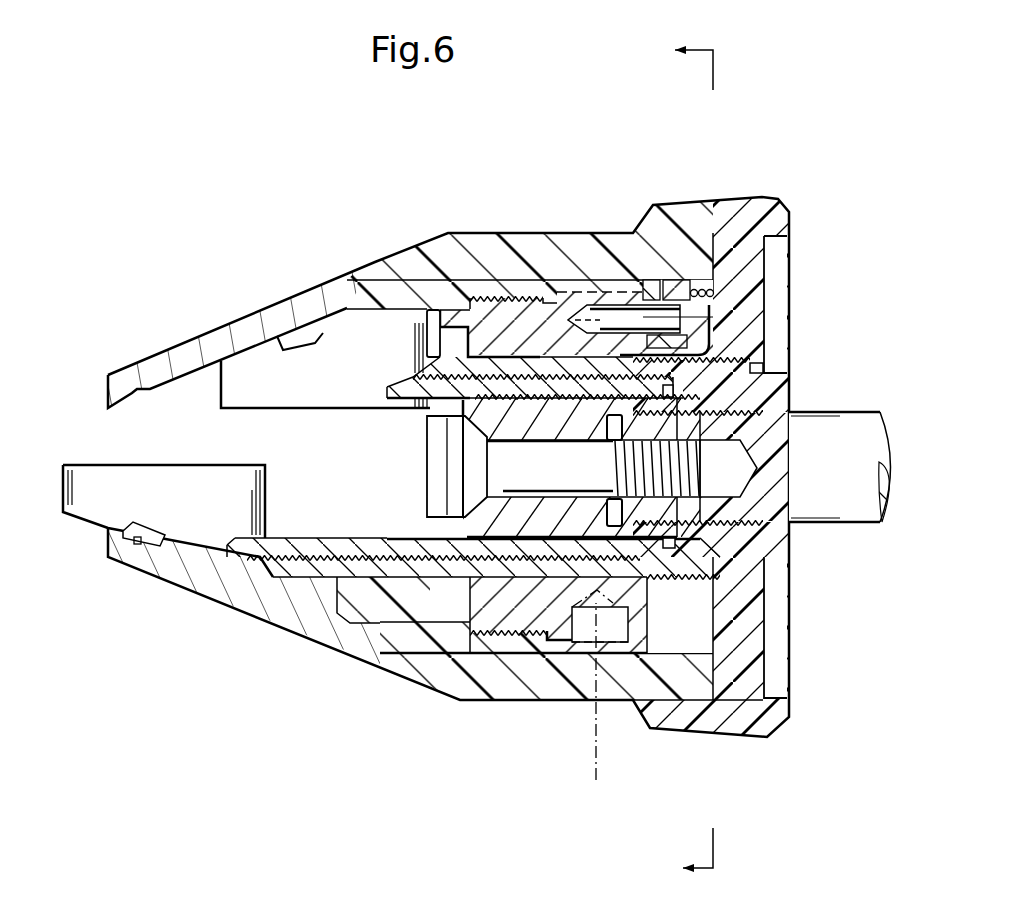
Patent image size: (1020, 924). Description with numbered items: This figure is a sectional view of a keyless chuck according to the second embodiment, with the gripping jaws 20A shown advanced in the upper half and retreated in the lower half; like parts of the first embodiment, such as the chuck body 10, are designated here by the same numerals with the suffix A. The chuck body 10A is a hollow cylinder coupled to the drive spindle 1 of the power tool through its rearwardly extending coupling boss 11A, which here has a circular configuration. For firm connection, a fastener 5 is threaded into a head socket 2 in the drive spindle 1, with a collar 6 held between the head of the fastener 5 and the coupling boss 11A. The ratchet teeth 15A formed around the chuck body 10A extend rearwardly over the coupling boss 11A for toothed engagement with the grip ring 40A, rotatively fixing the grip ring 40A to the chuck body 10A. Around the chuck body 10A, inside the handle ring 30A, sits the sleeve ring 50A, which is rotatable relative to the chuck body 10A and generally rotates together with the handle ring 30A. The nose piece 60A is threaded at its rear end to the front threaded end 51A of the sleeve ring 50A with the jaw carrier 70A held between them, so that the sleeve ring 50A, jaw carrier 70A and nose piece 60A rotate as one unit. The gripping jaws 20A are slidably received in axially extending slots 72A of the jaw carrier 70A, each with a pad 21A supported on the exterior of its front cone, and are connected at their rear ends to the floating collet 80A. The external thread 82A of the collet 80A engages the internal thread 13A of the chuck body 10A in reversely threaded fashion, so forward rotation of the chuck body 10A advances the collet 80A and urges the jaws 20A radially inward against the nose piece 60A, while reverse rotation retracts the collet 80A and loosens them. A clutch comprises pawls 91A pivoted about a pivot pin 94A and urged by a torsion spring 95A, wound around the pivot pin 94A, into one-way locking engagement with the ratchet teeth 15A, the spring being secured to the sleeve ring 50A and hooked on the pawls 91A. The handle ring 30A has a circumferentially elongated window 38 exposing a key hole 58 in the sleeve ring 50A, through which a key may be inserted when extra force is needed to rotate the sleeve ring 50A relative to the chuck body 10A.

The drive spindle 1 is at (860, 410).
The head socket 2 is at (722, 478).
The fastener 5 is at (527, 480).
The collar 6 is at (550, 523).
The chuck body 10 is at (686, 463).
The chuck body 10A is at (530, 367).
The coupling boss 11A is at (733, 392).
The internal thread 13A is at (577, 548).
The ratchet teeth 15A is at (753, 330).
The gripping jaws 20A is at (265, 377).
The pad 21A is at (302, 337).
The handle ring 30A is at (455, 240).
The window 38 is at (594, 700).
The grip ring 40A is at (750, 200).
The sleeve ring 50A is at (567, 290).
The front threaded end 51A is at (497, 297).
The key hole 58 is at (613, 628).
The nose piece 60A is at (155, 352).
The jaw carrier 70A is at (348, 597).
The axially extending slots 72A is at (360, 280).
The floating collet 80A is at (420, 310).
The external thread 82A is at (388, 560).
The pawls 91A is at (683, 290).
The pivot pin 94A is at (617, 320).
The torsion spring 95A is at (770, 238).